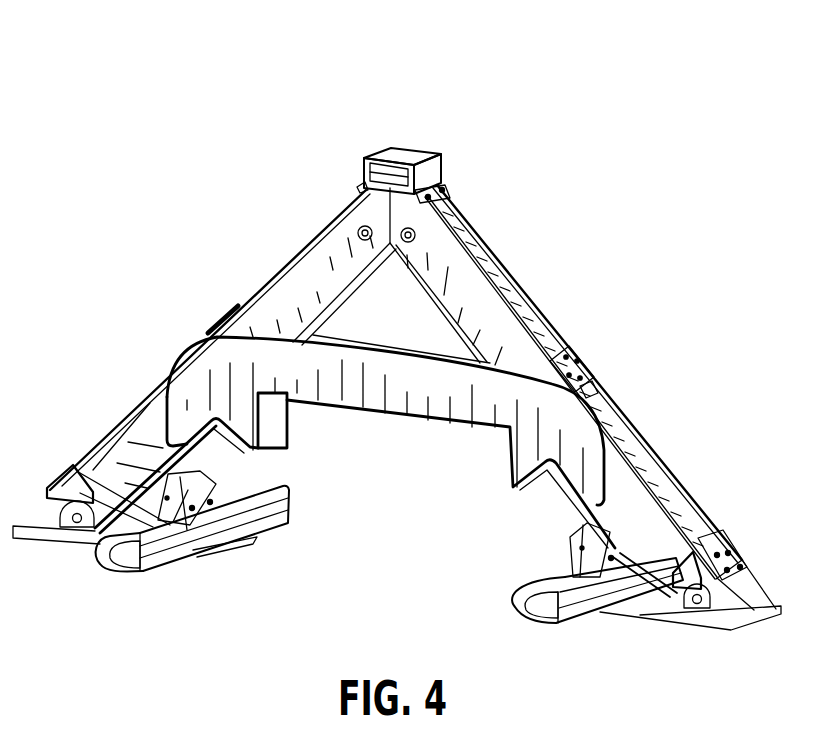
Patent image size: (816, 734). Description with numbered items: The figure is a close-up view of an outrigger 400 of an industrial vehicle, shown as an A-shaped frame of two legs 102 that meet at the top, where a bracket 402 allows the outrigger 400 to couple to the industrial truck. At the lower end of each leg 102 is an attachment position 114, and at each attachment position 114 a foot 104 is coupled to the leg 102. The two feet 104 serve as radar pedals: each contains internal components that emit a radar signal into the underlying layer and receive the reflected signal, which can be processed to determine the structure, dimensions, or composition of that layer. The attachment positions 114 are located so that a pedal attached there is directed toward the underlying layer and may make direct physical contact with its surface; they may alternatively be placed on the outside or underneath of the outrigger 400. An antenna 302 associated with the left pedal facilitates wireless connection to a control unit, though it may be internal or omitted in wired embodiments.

The outrigger 400 is at (102, 57).
The bracket 402 is at (409, 148).
The outrigger leg 102 is at (314, 238).
The foot 104 is at (181, 554).
The attachment position 114 is at (213, 492).
The antenna 302 is at (200, 458).